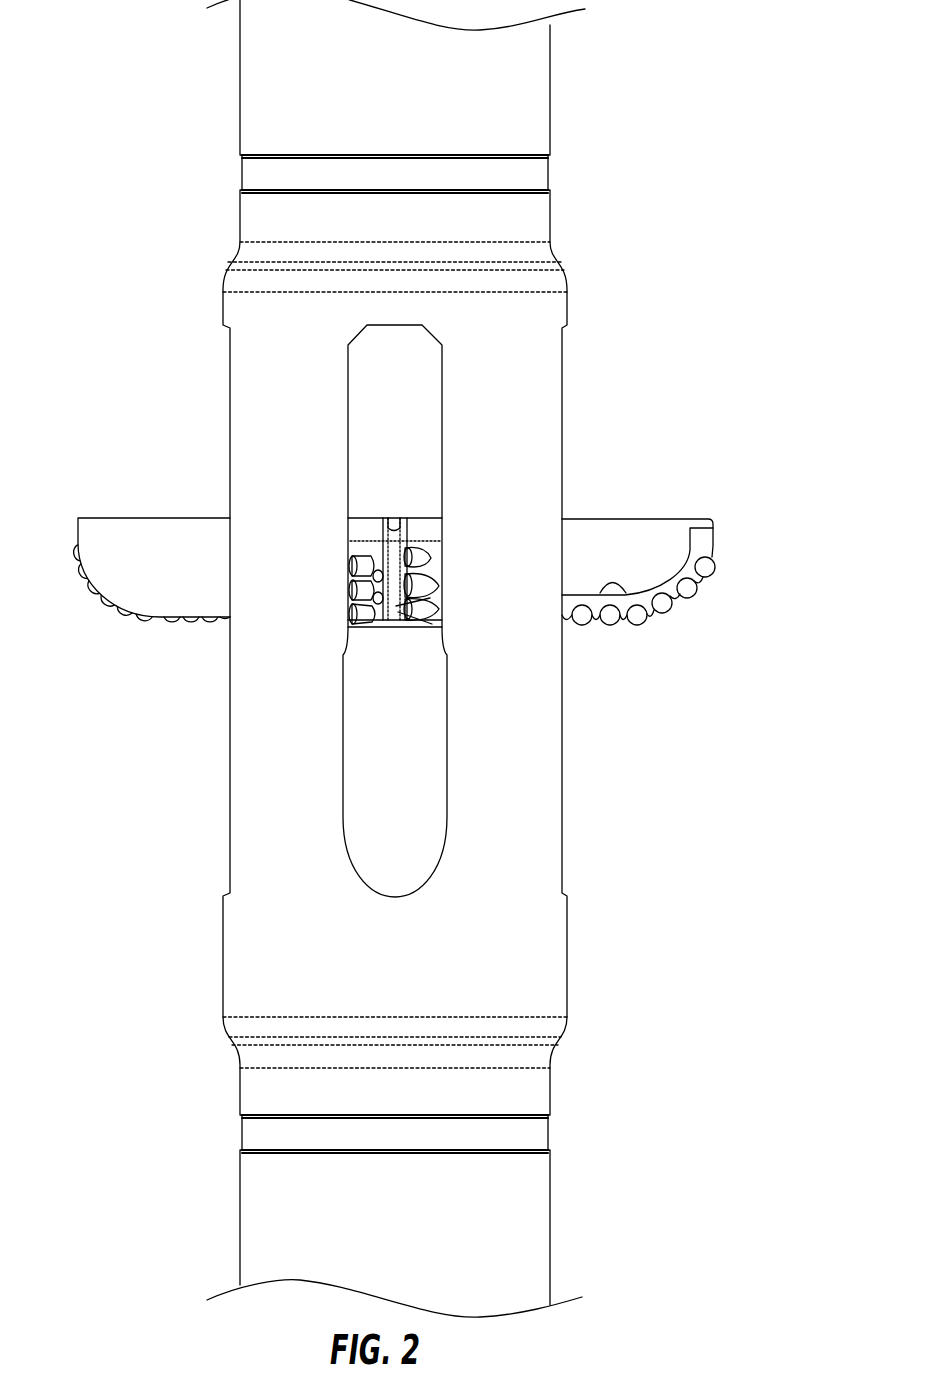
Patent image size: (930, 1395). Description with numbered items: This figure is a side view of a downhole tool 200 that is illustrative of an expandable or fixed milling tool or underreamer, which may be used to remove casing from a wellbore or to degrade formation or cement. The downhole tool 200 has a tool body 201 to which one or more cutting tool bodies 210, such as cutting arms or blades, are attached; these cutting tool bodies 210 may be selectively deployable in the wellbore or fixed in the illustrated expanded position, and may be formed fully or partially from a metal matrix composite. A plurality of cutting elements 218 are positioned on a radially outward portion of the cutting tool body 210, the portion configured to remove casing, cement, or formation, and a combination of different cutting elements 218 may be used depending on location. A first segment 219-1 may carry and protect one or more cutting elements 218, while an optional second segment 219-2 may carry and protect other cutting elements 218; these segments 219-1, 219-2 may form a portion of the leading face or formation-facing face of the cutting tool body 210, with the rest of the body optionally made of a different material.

The downhole tool 200 is at (643, 54).
The tool body 201 is at (537, 380).
The cutting tool body 210 is at (670, 570).
The cutting element 218 is at (716, 567).
The first segment 219-1 is at (628, 590).
The second segment 219-2 is at (688, 550).